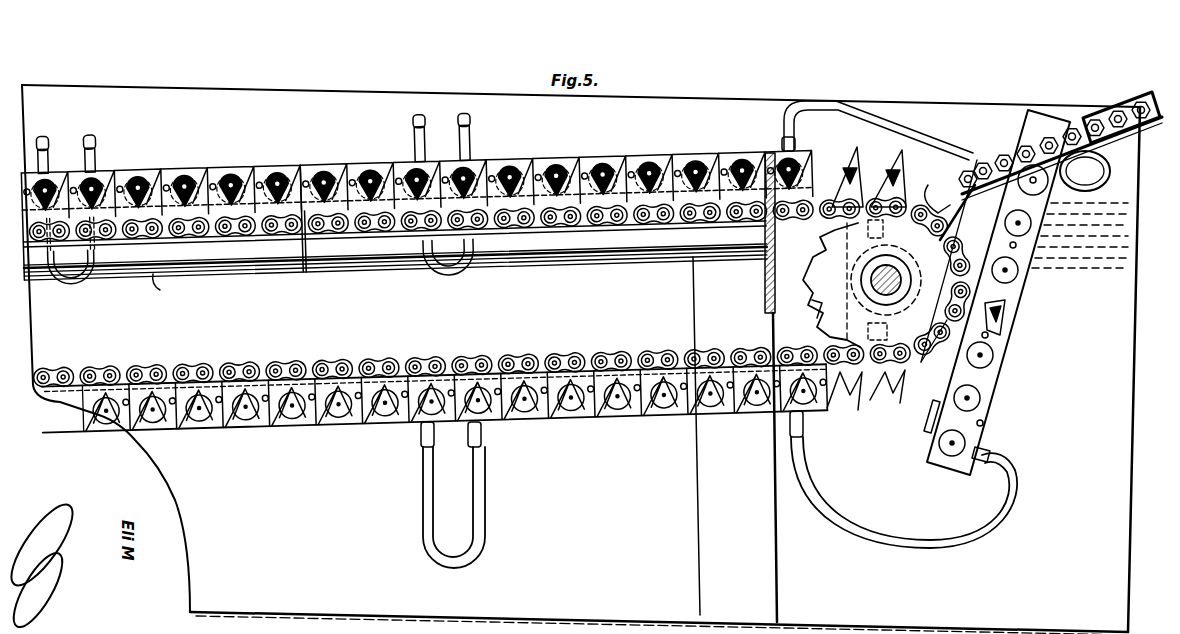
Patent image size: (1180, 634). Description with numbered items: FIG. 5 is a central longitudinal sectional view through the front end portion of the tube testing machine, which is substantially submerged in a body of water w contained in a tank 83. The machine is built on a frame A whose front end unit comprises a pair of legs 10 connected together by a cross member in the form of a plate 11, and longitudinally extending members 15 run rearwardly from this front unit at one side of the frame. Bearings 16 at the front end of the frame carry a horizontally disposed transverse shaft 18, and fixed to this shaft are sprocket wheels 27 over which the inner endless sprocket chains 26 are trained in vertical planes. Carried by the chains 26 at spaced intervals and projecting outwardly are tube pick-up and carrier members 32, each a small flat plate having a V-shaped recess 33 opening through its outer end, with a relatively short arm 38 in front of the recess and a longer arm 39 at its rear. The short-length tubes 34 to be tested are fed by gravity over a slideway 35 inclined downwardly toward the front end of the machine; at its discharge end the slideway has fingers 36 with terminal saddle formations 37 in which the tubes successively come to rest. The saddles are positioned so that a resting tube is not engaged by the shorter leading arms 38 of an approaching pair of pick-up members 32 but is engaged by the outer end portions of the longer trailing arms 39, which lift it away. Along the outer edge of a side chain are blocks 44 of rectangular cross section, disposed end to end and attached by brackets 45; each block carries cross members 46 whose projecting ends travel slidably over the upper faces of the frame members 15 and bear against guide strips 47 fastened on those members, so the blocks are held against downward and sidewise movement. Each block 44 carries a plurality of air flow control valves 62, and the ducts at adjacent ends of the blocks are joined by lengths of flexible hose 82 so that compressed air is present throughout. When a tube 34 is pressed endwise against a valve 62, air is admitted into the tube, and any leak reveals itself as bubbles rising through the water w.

The legs 10 is at (757, 528).
The plate 11 is at (765, 282).
The longitudinally extending members 15 is at (378, 262).
The bearings 16 is at (902, 272).
The shaft 18 is at (870, 277).
The endless sprocket chains 26 is at (615, 222).
The sprocket wheels 27 is at (818, 306).
The tube pick-up and carrier members 32 is at (567, 362).
The V-shaped recess 33 is at (942, 185).
The short-length tubes 34 is at (558, 183).
The slideway 35 is at (1112, 108).
The fingers 36 is at (878, 172).
The saddle formations 37 is at (960, 261).
The short arm 38 is at (350, 417).
The longer arm 39 is at (1002, 320).
The blocks 44 is at (228, 178).
The brackets 45 is at (908, 305).
The cross members 46 is at (935, 418).
The guide strips 47 is at (304, 268).
The air flow control valves 62 is at (897, 106).
The flexible tube or conduit 82 is at (470, 271).
The tank 83 is at (241, 96).
The frame A is at (163, 289).
The body of water w is at (1080, 228).